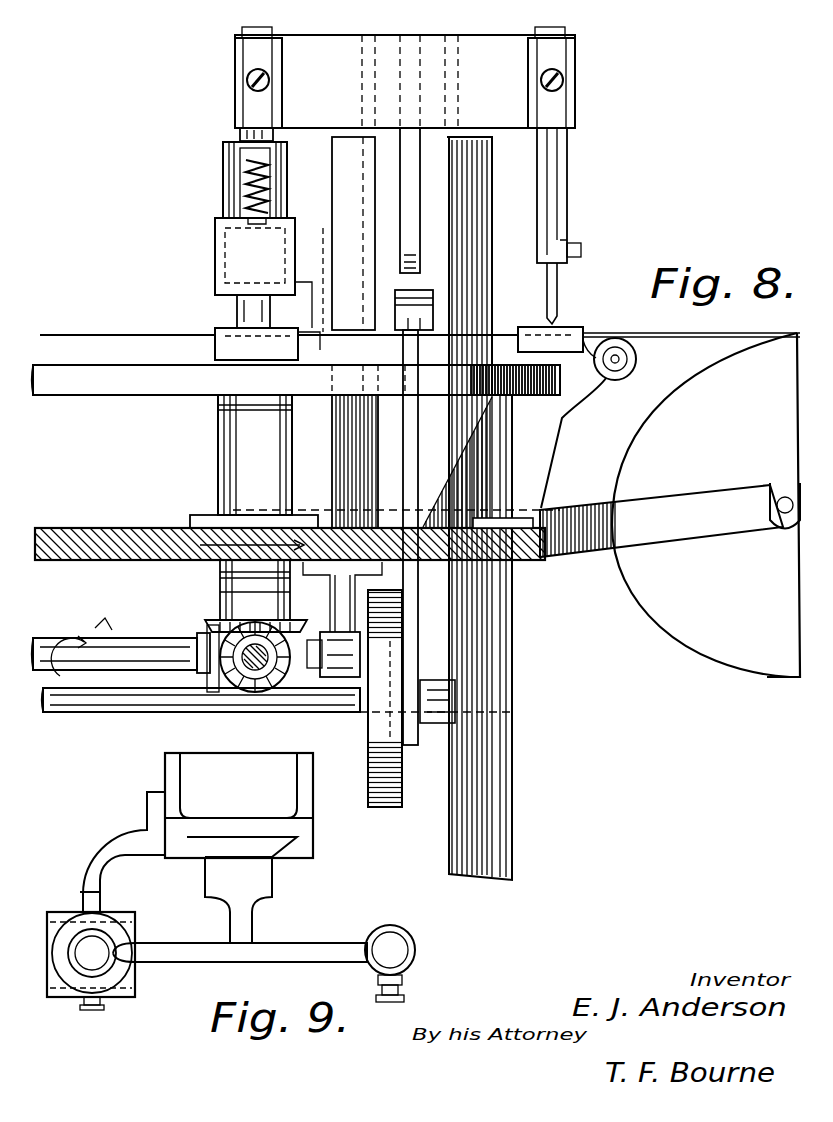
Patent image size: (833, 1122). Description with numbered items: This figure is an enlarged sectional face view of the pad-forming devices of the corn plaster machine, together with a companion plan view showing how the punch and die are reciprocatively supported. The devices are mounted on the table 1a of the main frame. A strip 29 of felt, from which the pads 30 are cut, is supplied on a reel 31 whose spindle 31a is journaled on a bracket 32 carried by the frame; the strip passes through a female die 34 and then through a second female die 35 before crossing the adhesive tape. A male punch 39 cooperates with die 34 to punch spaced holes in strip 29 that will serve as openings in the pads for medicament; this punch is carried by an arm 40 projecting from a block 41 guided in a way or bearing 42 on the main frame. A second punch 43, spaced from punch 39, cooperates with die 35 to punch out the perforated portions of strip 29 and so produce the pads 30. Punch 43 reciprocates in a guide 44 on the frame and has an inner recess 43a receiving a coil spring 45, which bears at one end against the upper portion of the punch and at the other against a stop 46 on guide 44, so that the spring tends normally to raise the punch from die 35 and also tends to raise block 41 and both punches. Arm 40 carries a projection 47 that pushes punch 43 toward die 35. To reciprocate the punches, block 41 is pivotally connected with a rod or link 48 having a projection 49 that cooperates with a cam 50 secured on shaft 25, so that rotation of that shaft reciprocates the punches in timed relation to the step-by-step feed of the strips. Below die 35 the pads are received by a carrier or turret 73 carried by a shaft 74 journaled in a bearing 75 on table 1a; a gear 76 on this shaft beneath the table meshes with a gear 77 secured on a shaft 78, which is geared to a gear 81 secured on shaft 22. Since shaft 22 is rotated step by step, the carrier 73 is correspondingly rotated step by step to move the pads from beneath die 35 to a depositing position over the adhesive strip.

In FIG. 8, the table 1a is at (128, 528).
In FIG. 8, the shaft 22 is at (158, 626).
In FIG. 8, the shaft 25 is at (136, 714).
In FIG. 8, the strip 29 is at (279, 320).
In FIG. 8, the pad 30 is at (619, 382).
In FIG. 8, the reel 31 is at (670, 505).
In FIG. 8, the spindle 31a is at (770, 536).
In FIG. 8, the bracket 32 is at (661, 521).
In FIG. 8, the female die 34 is at (576, 331).
In FIG. 8, the second female die 35 is at (216, 350).
In FIG. 9, the second female die 35 is at (83, 912).
In FIG. 8, the male punch 39 is at (549, 296).
In FIG. 9, the male punch 39 is at (400, 940).
In FIG. 8, the arm 40 is at (540, 104).
In FIG. 9, the arm 40 is at (322, 947).
In FIG. 8, the block 41 is at (420, 228).
In FIG. 9, the block 41 is at (242, 890).
In FIG. 8, the bearing 42 is at (484, 219).
In FIG. 9, the bearing 42 is at (300, 832).
In FIG. 8, the punch 43 is at (270, 317).
In FIG. 8, the inner recess 43a is at (270, 186).
In FIG. 8, the guide 44 is at (215, 254).
In FIG. 9, the guide 44 is at (135, 942).
In FIG. 8, the coil spring 45 is at (240, 186).
In FIG. 8, the stop 46 is at (262, 226).
In FIG. 8, the projection 47 is at (242, 134).
In FIG. 9, the projection 47 is at (93, 990).
In FIG. 8, the rod or link 48 is at (418, 453).
In FIG. 8, the projection 49 is at (412, 746).
In FIG. 8, the cam 50 is at (400, 808).
In FIG. 8, the carrier or turret 73 is at (146, 396).
In FIG. 8, the shaft 74 is at (279, 420).
In FIG. 8, the bearing 75 is at (304, 518).
In FIG. 8, the gear 76 is at (317, 634).
In FIG. 8, the gear 77 is at (266, 690).
In FIG. 8, the shaft 78 is at (242, 690).
In FIG. 8, the gear 81 is at (215, 622).